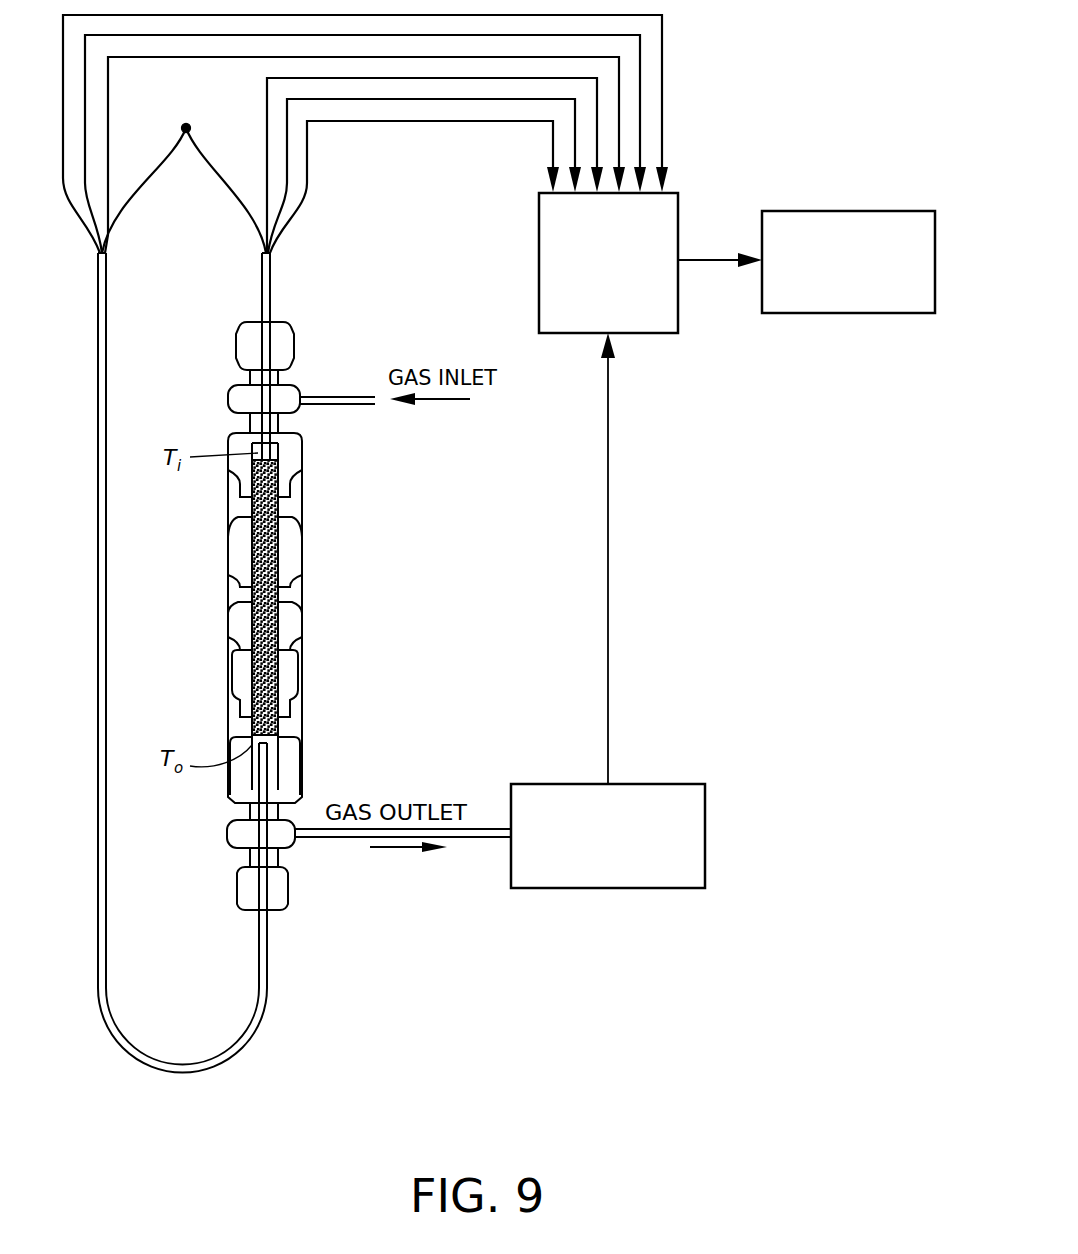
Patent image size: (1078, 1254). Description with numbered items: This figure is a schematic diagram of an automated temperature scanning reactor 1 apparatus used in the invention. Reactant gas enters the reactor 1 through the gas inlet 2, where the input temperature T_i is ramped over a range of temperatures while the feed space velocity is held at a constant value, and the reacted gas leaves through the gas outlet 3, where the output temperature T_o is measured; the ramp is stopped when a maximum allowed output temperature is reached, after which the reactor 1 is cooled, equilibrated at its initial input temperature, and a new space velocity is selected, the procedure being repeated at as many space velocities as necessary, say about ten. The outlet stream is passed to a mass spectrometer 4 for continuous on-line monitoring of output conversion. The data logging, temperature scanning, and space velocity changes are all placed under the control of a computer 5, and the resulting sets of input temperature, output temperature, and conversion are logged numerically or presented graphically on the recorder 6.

The temperature scanning reactor 1 is at (302, 593).
The gas inlet 2 is at (300, 392).
The gas outlet 3 is at (283, 841).
The mass spectrometer 4 is at (593, 888).
The computer 5 is at (539, 290).
The recorder 6 is at (830, 313).